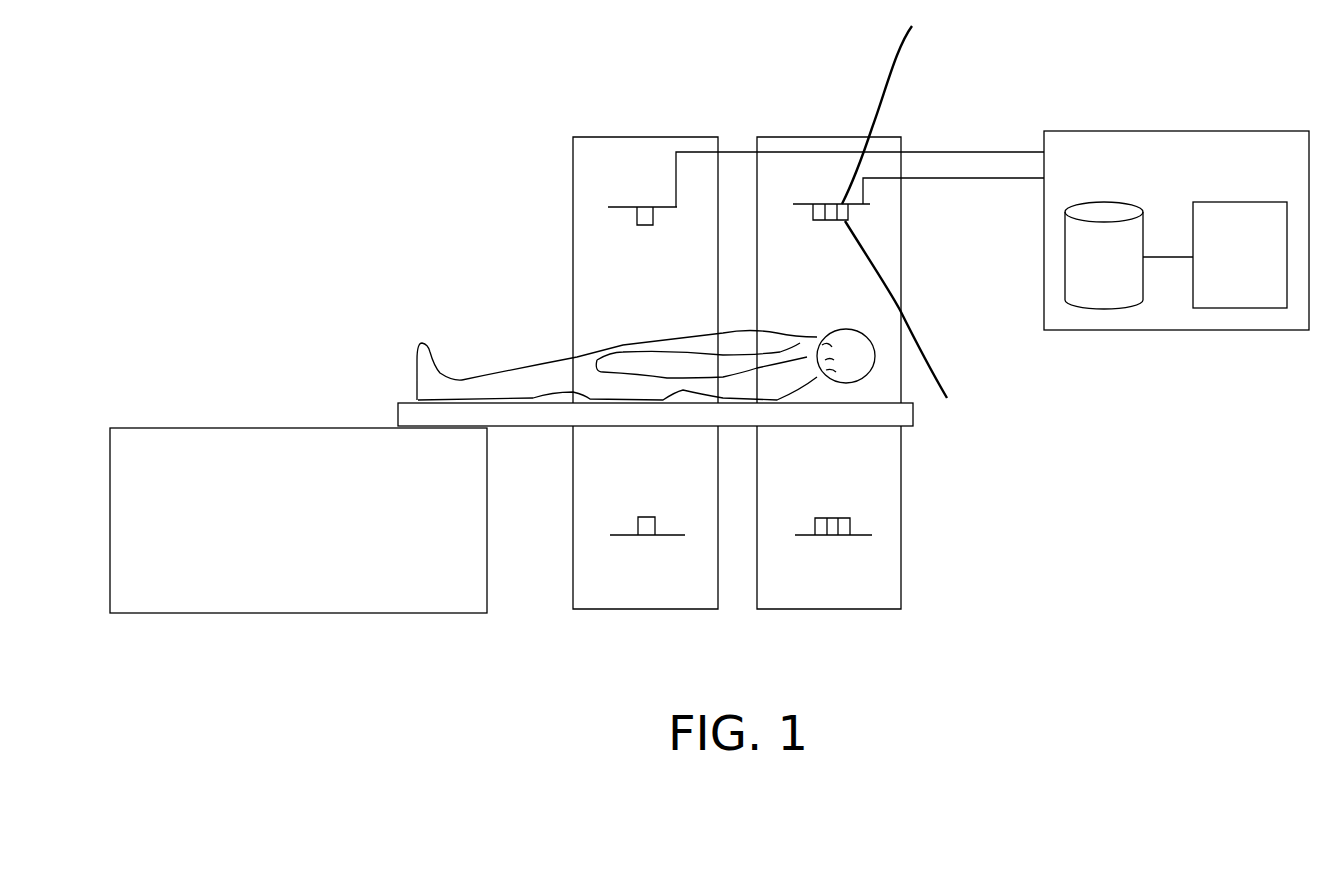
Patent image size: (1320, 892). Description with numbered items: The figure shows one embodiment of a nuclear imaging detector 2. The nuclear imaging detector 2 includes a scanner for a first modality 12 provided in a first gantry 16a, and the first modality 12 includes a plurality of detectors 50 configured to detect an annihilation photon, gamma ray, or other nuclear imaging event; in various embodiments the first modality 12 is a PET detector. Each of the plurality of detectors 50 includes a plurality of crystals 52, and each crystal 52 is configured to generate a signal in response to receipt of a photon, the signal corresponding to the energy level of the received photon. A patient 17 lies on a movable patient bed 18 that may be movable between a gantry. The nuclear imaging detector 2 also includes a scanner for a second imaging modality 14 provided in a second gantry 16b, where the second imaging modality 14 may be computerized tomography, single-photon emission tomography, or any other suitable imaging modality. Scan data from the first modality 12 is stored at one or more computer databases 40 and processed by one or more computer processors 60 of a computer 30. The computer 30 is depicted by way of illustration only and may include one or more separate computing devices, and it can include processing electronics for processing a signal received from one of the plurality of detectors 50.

The nuclear imaging detector 2 is at (316, 210).
The first modality 12 is at (849, 210).
The second imaging modality 14 is at (617, 207).
The first gantry 16a is at (644, 136).
The second gantry 16b is at (826, 135).
The patient 17 is at (544, 357).
The movable patient bed 18 is at (405, 404).
The computer 30 is at (1076, 131).
The computer database 40 is at (1090, 295).
The detector 50 is at (888, 102).
The crystal 52 is at (913, 317).
The computer processor 60 is at (1232, 277).